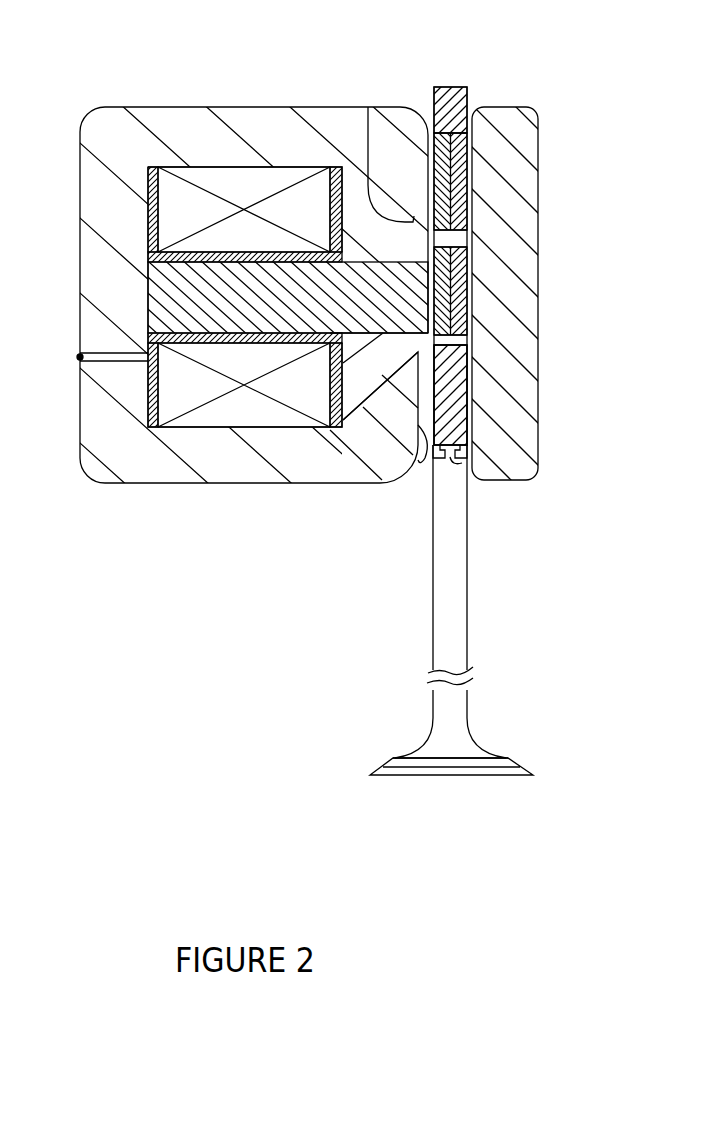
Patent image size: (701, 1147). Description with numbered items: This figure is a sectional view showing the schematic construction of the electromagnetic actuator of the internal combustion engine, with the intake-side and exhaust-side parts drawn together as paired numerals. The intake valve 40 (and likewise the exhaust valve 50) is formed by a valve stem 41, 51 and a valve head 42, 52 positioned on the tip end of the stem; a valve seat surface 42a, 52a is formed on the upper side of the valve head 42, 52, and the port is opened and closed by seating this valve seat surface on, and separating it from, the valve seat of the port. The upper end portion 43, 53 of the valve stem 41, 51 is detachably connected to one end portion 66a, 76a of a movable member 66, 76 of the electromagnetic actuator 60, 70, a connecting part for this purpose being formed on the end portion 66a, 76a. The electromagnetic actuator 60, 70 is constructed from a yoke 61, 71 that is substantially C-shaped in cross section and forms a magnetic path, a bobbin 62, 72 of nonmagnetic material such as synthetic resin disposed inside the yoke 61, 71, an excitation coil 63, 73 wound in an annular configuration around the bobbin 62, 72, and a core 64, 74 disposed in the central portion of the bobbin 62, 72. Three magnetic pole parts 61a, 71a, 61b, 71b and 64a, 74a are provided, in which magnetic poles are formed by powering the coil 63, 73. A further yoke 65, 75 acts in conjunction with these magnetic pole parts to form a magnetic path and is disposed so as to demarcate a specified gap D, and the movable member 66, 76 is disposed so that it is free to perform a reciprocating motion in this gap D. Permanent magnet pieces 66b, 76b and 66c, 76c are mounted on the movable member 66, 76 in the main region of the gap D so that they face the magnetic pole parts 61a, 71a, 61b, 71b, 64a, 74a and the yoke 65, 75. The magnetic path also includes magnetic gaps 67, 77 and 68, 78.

The intake valve 40 is at (429, 615).
The exhaust valve 50 is at (429, 615).
The valve stem 41 is at (482, 601).
The valve stem 51 is at (466, 538).
The valve head 42 is at (404, 729).
The valve head 52 is at (393, 773).
The valve seat surface 42a is at (416, 715).
The valve seat surface 52a is at (393, 757).
The upper end portion 43 is at (514, 461).
The upper end portion 53 is at (452, 460).
The electromagnetic actuator 60 is at (252, 388).
The electromagnetic actuator 70 is at (252, 388).
The yoke 61 is at (252, 388).
The yoke 71 is at (252, 388).
The magnetic pole part 61a is at (368, 441).
The magnetic pole part 71a is at (412, 365).
The magnetic pole part 61b is at (390, 111).
The magnetic pole part 71b is at (368, 107).
The bobbin 62 is at (252, 388).
The bobbin 72 is at (82, 142).
The excitation coil 63 is at (245, 247).
The excitation coil 73 is at (250, 187).
The core 64 is at (227, 301).
The core 74 is at (163, 290).
The magnetic pole part 64a is at (329, 453).
The magnetic pole part 74a is at (330, 342).
The yoke 65 is at (532, 285).
The yoke 75 is at (538, 228).
The movable member 66 is at (523, 231).
The movable member 76 is at (523, 231).
The end portion of movable member 66a is at (521, 395).
The end portion of movable member 76a is at (470, 431).
The permanent magnet piece 66b is at (523, 291).
The permanent magnet piece 76b is at (470, 288).
The permanent magnet piece 66c is at (522, 176).
The permanent magnet piece 76c is at (470, 160).
The magnetic gap 67 is at (81, 380).
The magnetic gap 77 is at (80, 357).
The magnetic gap 68 is at (393, 474).
The magnetic gap 78 is at (424, 402).
The gap D is at (424, 106).